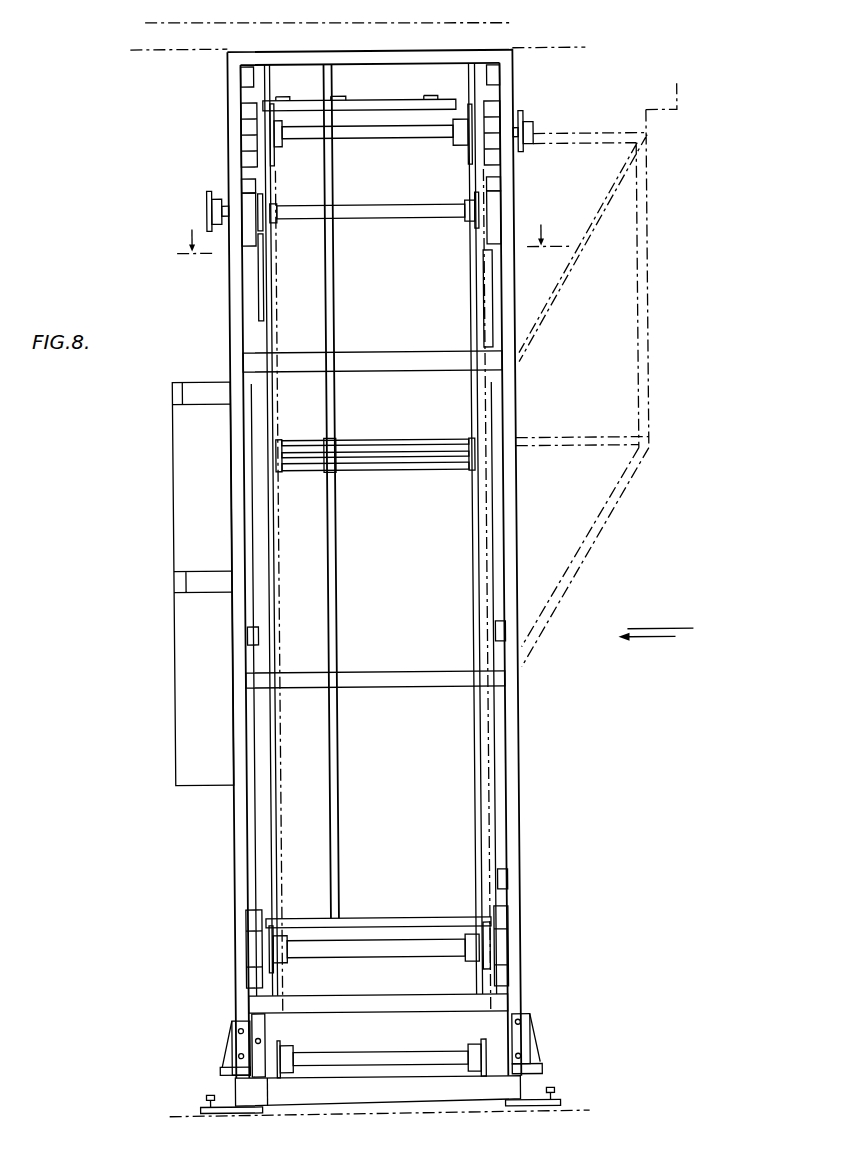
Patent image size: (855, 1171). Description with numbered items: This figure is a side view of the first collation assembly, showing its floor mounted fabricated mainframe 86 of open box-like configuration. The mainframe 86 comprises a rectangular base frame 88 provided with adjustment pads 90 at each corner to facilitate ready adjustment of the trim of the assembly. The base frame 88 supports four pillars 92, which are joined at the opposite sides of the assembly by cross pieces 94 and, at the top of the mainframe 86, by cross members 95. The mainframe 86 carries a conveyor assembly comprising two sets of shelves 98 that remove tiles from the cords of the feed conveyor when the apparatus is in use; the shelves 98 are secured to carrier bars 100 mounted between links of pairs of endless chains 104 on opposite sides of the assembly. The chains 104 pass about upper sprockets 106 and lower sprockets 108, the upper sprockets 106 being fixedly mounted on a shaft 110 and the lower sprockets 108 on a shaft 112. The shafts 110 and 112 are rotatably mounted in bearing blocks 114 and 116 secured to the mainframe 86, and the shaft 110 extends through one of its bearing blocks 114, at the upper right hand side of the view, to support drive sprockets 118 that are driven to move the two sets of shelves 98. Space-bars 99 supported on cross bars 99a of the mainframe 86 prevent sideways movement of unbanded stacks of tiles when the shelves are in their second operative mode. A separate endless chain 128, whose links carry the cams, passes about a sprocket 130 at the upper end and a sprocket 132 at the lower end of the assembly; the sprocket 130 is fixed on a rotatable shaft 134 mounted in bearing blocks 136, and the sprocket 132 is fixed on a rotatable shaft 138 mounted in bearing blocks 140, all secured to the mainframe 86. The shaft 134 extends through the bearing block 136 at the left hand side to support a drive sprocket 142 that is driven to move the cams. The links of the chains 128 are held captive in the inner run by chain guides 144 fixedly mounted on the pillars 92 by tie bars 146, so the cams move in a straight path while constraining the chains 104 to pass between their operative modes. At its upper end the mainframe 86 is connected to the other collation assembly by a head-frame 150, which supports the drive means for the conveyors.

The mainframe 86 is at (194, 880).
The base frame 88 is at (290, 1097).
The adjustment pads 90 is at (225, 1112).
The pillars 92 is at (233, 685).
The cross pieces 94 is at (496, 62).
The cross members 95 is at (244, 79).
The shelves 98 is at (404, 471).
The space-bars 99 is at (337, 756).
The cross bars 99a is at (356, 915).
The carrier bars 100 is at (331, 471).
The endless chains 104 is at (492, 824).
The upper sprockets 106 is at (273, 151).
The lower sprockets 108 is at (277, 1043).
The shaft 110 is at (359, 136).
The shaft 112 is at (389, 1059).
The bearing blocks 114 is at (244, 116).
The bearing blocks 116 is at (253, 1049).
The drive sprockets 118 is at (538, 119).
The endless chain 128 is at (265, 251).
The sprocket 130 is at (263, 187).
The sprocket 132 is at (271, 941).
The shaft 134 is at (356, 213).
The bearing blocks 136 is at (248, 236).
The shaft 138 is at (415, 943).
The bearing blocks 140 is at (250, 934).
The drive sprocket 142 is at (211, 206).
The chain guides 144 is at (262, 513).
The tie bars 146 is at (247, 636).
The head-frame 150 is at (194, 36).